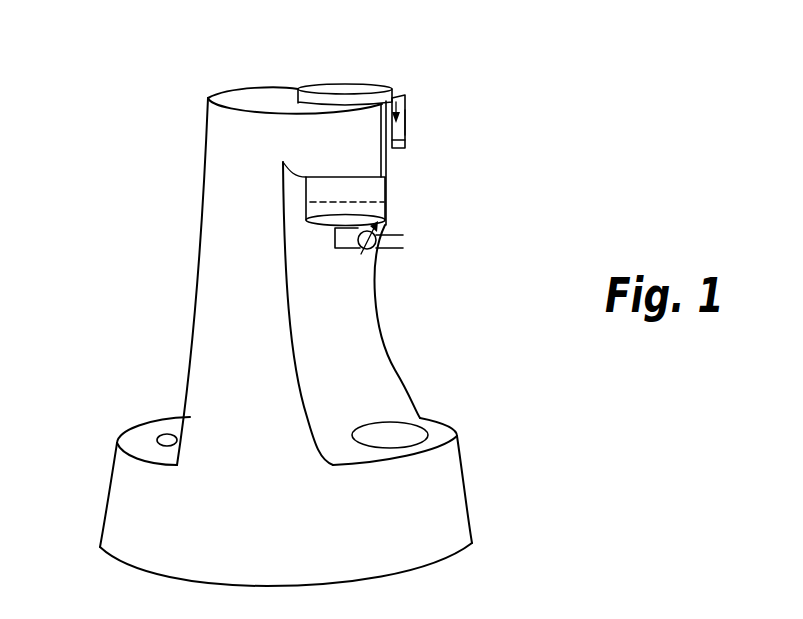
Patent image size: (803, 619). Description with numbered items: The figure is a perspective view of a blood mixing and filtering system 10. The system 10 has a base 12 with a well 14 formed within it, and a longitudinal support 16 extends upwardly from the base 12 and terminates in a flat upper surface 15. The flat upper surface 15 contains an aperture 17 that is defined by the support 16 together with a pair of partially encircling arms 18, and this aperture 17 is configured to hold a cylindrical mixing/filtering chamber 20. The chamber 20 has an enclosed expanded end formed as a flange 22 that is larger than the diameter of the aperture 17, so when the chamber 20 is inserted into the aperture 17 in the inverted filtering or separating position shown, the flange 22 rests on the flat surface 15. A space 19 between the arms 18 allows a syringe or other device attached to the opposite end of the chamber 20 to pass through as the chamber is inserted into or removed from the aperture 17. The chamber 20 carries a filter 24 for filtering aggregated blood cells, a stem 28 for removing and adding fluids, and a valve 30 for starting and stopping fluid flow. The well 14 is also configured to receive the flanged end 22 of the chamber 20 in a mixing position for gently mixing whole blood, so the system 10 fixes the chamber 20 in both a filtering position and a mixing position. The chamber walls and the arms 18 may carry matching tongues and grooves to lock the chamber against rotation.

The system 10 is at (114, 147).
The base 12 is at (443, 438).
The well 14 is at (405, 429).
The flat upper surface 15 is at (260, 100).
The longitudinal support 16 is at (198, 272).
The aperture 17 is at (404, 98).
The partially encircling arms 18 is at (406, 122).
The space 19 is at (410, 150).
The cylindrical mixing/filtering chamber 20 is at (388, 170).
The flange 22 is at (352, 85).
The filter 24 is at (388, 202).
The stem 28 is at (360, 249).
The valve 30 is at (380, 252).